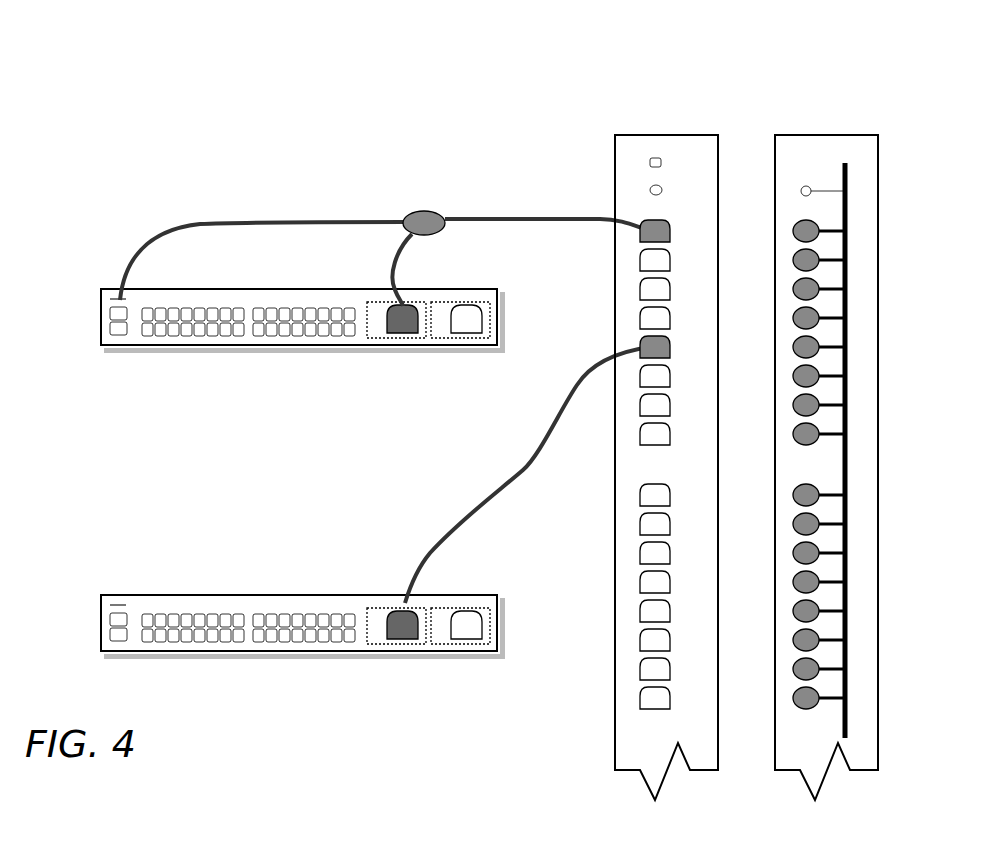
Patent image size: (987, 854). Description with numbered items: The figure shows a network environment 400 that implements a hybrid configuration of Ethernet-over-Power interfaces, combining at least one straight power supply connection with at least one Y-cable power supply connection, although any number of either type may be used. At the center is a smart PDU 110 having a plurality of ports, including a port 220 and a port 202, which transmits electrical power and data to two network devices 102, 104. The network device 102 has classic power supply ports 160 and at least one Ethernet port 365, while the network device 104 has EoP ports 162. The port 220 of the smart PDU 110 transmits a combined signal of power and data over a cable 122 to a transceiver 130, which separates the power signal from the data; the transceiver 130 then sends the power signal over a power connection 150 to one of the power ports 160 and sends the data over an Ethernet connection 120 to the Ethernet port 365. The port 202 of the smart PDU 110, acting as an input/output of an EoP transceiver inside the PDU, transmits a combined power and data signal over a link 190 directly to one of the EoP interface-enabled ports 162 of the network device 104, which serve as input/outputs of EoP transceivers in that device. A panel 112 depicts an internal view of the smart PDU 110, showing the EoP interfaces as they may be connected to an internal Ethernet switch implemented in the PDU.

The network environment 400 is at (145, 151).
The network device 102 is at (261, 317).
The network device 104 is at (258, 680).
The smart PDU 110 is at (577, 443).
The panel 112 is at (884, 172).
The Ethernet connection 120 is at (266, 221).
The Ethernet plus power cable 122 is at (502, 213).
The transceiver 130 is at (401, 222).
The power connection 150 is at (400, 260).
The classic power supply ports 160 is at (438, 339).
The EoP ports 162 is at (440, 645).
The link 190 is at (423, 560).
The port 202 is at (648, 360).
The port 220 is at (647, 227).
The Ethernet port 365 is at (114, 298).